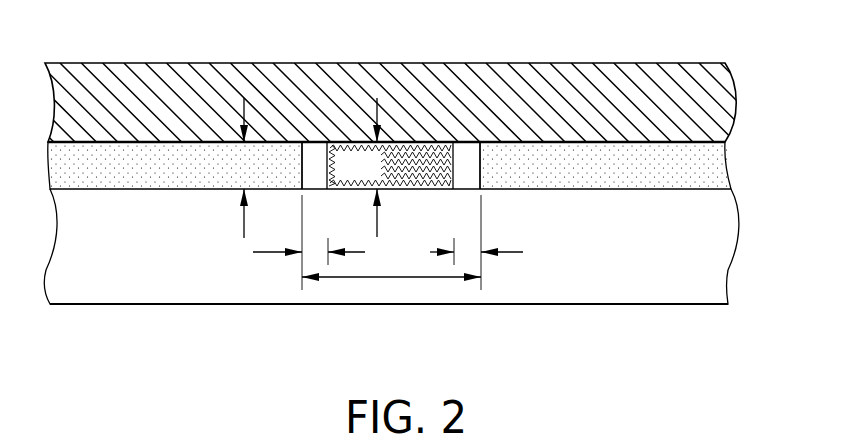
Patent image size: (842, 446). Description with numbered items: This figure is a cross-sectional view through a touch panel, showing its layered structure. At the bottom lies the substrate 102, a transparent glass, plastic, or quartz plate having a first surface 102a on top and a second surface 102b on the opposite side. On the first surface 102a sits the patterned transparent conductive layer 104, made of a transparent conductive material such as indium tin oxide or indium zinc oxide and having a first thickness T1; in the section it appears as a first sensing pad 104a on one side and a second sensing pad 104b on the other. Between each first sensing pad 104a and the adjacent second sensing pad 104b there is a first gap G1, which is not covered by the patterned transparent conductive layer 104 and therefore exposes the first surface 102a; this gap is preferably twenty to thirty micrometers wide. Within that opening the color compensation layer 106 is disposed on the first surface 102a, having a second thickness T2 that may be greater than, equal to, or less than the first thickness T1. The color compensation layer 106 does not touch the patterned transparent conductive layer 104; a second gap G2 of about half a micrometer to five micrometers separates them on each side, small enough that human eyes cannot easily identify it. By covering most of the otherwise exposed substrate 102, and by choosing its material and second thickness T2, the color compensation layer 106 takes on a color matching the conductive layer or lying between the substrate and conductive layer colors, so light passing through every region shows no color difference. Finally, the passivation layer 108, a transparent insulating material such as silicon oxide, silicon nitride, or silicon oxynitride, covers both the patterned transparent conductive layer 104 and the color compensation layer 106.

The substrate 102 is at (704, 247).
The first surface 102a is at (706, 189).
The second surface 102b is at (703, 305).
The patterned transparent conductive layer 104 is at (391, 165).
The first sensing pads 104a is at (577, 190).
The second sensing pads 104b is at (165, 190).
The color compensation layer 106 is at (418, 170).
The passivation layer 108 is at (704, 99).
The first thickness T1 is at (226, 168).
The second thickness T2 is at (359, 167).
The first gap G1 is at (391, 264).
The second gap G2 is at (388, 242).